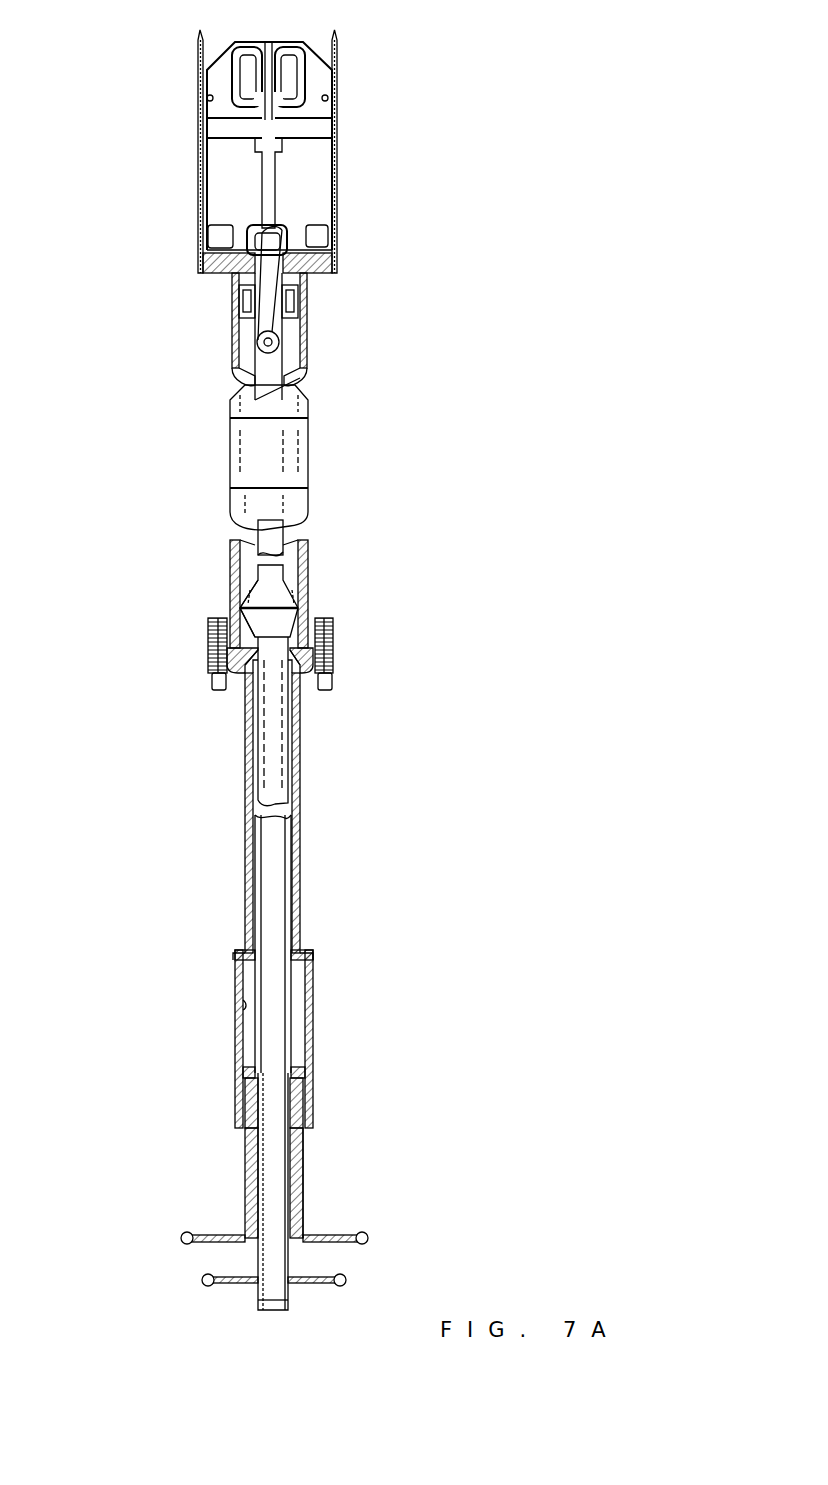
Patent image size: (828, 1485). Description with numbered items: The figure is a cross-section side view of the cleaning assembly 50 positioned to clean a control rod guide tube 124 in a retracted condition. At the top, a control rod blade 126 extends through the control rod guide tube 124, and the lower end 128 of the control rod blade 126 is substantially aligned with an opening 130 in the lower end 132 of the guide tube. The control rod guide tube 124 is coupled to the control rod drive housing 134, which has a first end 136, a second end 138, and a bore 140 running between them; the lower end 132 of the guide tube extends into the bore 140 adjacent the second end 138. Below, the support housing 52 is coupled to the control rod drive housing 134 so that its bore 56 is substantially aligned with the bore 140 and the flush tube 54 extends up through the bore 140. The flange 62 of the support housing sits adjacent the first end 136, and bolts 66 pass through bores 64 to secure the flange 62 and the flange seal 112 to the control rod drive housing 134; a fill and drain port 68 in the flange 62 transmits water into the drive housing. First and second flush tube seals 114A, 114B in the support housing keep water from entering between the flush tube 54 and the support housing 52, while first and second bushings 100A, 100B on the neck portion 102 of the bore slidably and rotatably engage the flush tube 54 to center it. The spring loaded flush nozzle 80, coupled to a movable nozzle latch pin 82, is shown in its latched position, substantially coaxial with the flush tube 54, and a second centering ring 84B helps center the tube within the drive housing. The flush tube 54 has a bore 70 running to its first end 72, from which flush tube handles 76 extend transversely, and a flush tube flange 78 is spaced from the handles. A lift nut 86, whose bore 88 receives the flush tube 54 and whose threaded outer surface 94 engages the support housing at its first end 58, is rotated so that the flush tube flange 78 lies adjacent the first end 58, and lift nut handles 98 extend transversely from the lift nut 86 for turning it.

The cleaning assembly 50 is at (192, 439).
The support housing 52 is at (305, 1000).
The flush tube 54 is at (276, 377).
The bore 56 is at (245, 1010).
The first end 58 is at (248, 1130).
The flange 62 is at (238, 690).
The bores 64 is at (210, 630).
The bolts 66 is at (218, 683).
The fill and drain port 68 is at (300, 660).
The bore 70 is at (280, 1188).
The first end 72 is at (290, 1300).
The flush tube handles 76 is at (320, 1278).
The flush tube flange 78 is at (248, 1068).
The flush nozzle 80 is at (258, 328).
The nozzle latch pin 82 is at (285, 222).
The second centering ring 84B is at (265, 588).
The lift nut 86 is at (250, 1170).
The bore 88 is at (258, 1217).
The threaded outer surface 94 is at (300, 1150).
The lift nut handles 98 is at (342, 1233).
The first bushing 100A is at (245, 918).
The second bushing 100B is at (247, 683).
The neck portion 102 is at (308, 860).
The flange seal 112 is at (212, 645).
The first flush tube seal 114A is at (245, 615).
The second flush tube seal 114B is at (292, 652).
The control rod guide tube 124 is at (340, 62).
The control rod blade 126 is at (230, 168).
The lower end 128 is at (255, 232).
The opening 130 is at (285, 325).
The lower end 132 is at (235, 298).
The control rod drive housing 134 is at (305, 555).
The first end 136 is at (322, 603).
The second end 138 is at (305, 290).
The bore 140 is at (298, 342).